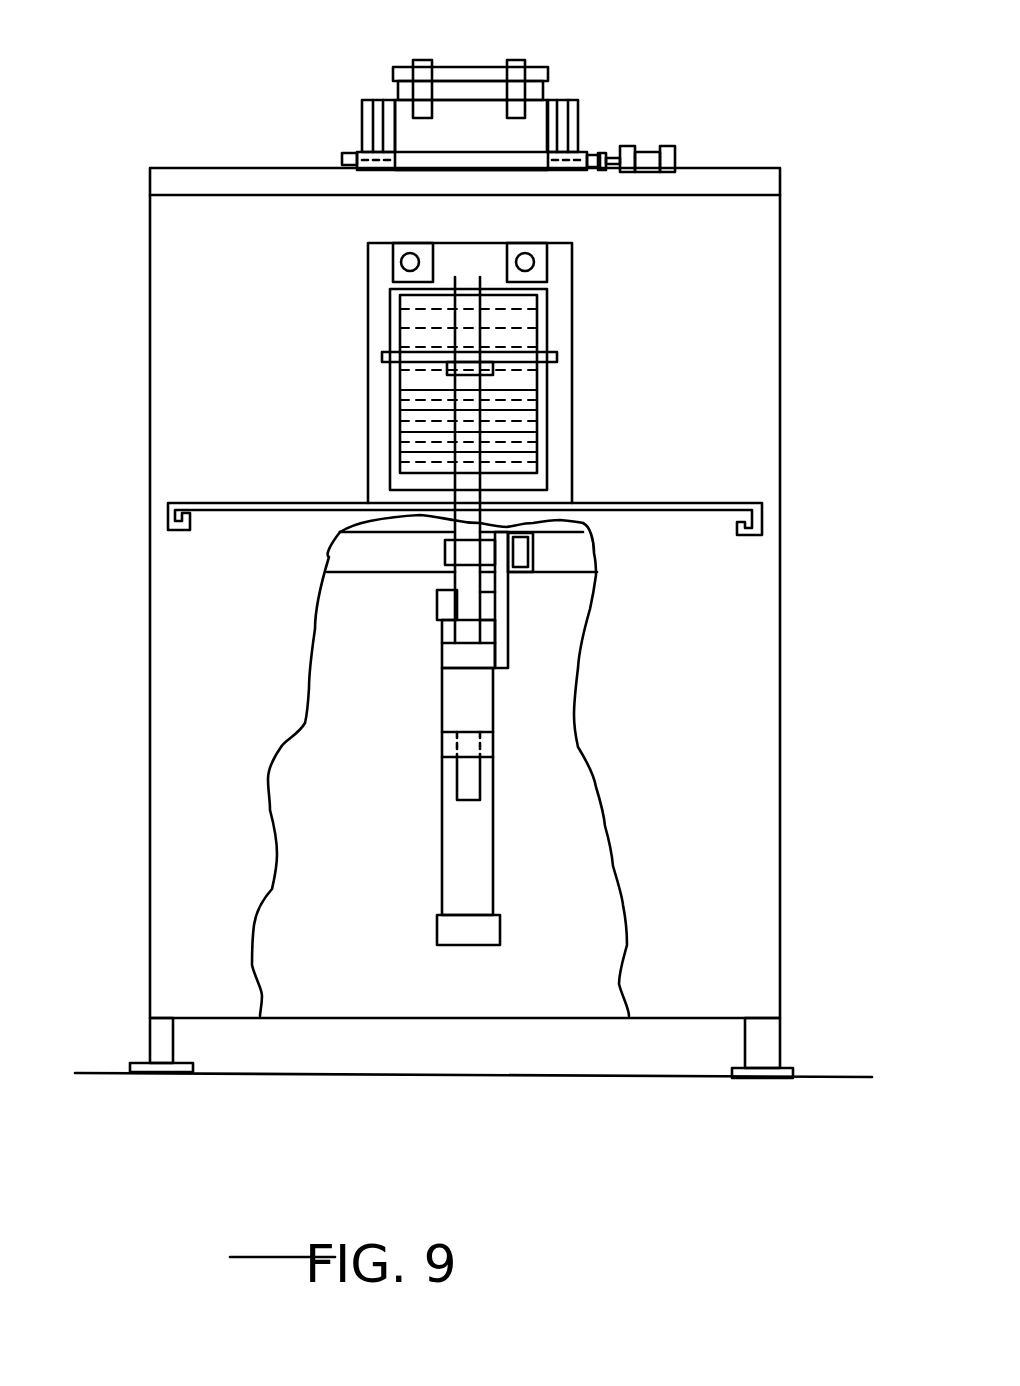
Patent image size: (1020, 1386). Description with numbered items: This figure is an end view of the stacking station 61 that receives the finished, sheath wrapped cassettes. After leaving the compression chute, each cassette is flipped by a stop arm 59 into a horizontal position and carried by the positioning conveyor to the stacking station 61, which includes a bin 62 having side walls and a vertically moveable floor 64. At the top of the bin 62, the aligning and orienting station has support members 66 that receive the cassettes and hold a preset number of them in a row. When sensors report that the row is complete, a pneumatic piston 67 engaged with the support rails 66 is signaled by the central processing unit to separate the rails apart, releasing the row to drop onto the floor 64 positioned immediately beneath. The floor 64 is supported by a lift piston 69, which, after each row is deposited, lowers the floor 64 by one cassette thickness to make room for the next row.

The stop arm 59 is at (513, 70).
The stacking station 61 is at (540, 129).
The bin 62 is at (735, 351).
The vertically moveable floor 64 is at (533, 481).
The support members 66 is at (368, 180).
The pneumatic piston 67 is at (690, 152).
The pneumatic piston 69 is at (456, 871).